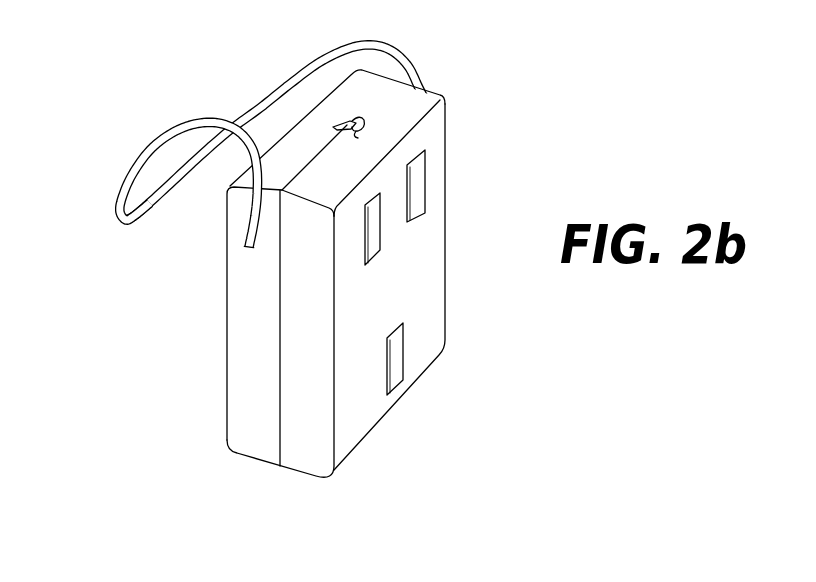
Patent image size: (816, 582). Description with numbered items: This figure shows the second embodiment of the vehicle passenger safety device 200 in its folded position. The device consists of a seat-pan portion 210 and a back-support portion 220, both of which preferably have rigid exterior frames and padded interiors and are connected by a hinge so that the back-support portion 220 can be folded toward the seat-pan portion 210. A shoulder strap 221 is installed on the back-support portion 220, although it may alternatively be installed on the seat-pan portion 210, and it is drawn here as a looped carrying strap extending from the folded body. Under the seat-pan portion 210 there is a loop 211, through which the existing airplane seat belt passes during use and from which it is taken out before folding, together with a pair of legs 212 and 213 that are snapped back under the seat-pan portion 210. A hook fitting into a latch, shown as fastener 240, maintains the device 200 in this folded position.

The vehicle passenger safety device 200 is at (101, 107).
The seat-pan portion 210 is at (295, 453).
The loop 211 is at (405, 350).
The leg 212 is at (373, 228).
The leg 213 is at (417, 165).
The back-support portion 220 is at (227, 305).
The shoulder strap 221 is at (358, 43).
The hook and latch 240 is at (363, 117).